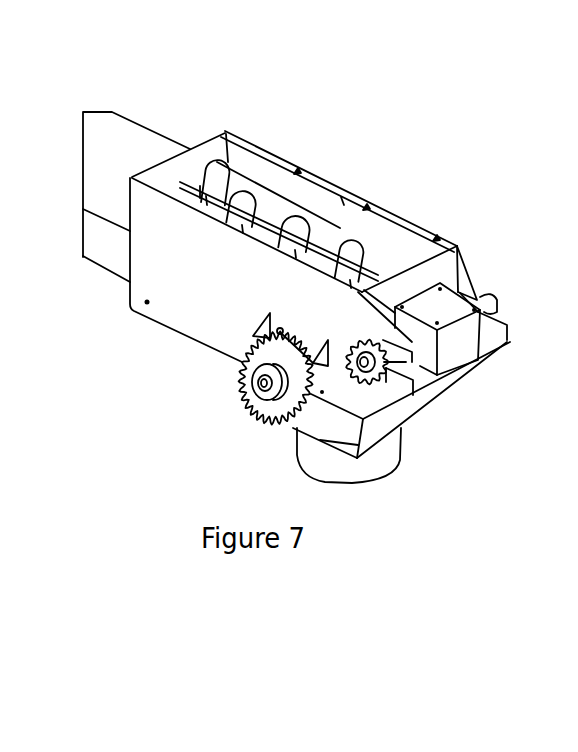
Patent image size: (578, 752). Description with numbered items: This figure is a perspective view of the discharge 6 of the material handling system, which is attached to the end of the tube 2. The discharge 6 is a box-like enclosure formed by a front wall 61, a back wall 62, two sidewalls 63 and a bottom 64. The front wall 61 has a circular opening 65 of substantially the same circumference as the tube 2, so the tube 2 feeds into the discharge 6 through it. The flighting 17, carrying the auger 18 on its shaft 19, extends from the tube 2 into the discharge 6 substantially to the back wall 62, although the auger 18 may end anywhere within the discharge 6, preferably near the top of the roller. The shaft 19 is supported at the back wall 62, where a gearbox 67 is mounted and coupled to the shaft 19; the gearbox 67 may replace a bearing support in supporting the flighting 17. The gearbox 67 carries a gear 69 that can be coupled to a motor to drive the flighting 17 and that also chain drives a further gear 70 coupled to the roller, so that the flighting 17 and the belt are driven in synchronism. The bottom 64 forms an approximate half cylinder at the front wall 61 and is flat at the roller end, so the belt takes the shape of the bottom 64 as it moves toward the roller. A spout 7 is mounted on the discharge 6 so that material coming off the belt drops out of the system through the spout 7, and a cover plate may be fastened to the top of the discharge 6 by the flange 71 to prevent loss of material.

The tube 2 is at (113, 132).
The discharge 6 is at (152, 345).
The spout 7 is at (358, 470).
The flighting 17 is at (271, 233).
The auger 18 is at (358, 247).
The shaft 19 is at (346, 197).
The front wall 61 is at (224, 158).
The back wall 62 is at (458, 256).
The sidewalls 63 is at (403, 247).
The bottom 64 is at (263, 208).
The circular opening 65 is at (198, 184).
The gearbox 67 is at (465, 343).
The gear 69 is at (385, 373).
The further gear 70 is at (265, 409).
The flange 71 is at (170, 169).